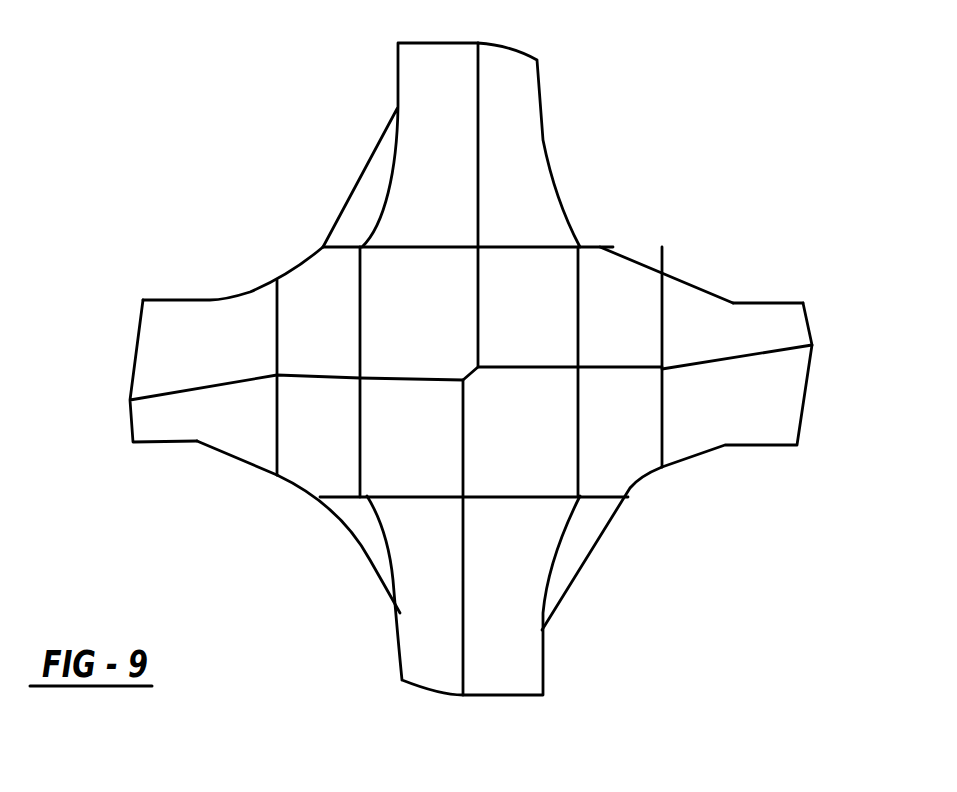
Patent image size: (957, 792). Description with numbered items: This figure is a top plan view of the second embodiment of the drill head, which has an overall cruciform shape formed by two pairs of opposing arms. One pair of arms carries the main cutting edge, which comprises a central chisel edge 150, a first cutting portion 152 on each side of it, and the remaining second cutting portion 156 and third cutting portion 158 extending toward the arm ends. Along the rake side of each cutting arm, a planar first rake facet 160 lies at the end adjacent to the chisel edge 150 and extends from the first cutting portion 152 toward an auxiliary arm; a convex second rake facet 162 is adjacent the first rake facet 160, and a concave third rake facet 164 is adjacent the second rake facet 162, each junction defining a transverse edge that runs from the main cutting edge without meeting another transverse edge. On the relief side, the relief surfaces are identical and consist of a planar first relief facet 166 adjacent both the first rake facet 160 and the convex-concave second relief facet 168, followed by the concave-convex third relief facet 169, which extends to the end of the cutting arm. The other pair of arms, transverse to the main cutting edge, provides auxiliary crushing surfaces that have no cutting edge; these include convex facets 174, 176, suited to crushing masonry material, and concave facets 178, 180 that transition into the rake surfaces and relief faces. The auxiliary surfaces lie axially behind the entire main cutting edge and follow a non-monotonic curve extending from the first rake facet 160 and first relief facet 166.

The chisel edge 150 is at (470, 367).
The first cutting portion 152 is at (543, 367).
The second cutting portion 156 is at (303, 373).
The third cutting portion 158 is at (158, 395).
The first rake facet 160 is at (517, 318).
The second rake facet 162 is at (606, 328).
The third rake facet 164 is at (206, 432).
The first relief facet 166 is at (402, 317).
The second relief facet 168 is at (295, 344).
The third relief facet 169 is at (190, 356).
The convex facet 174 is at (424, 152).
The convex facet 176 is at (490, 176).
The concave facet 178 is at (582, 224).
The concave facet 180 is at (360, 210).